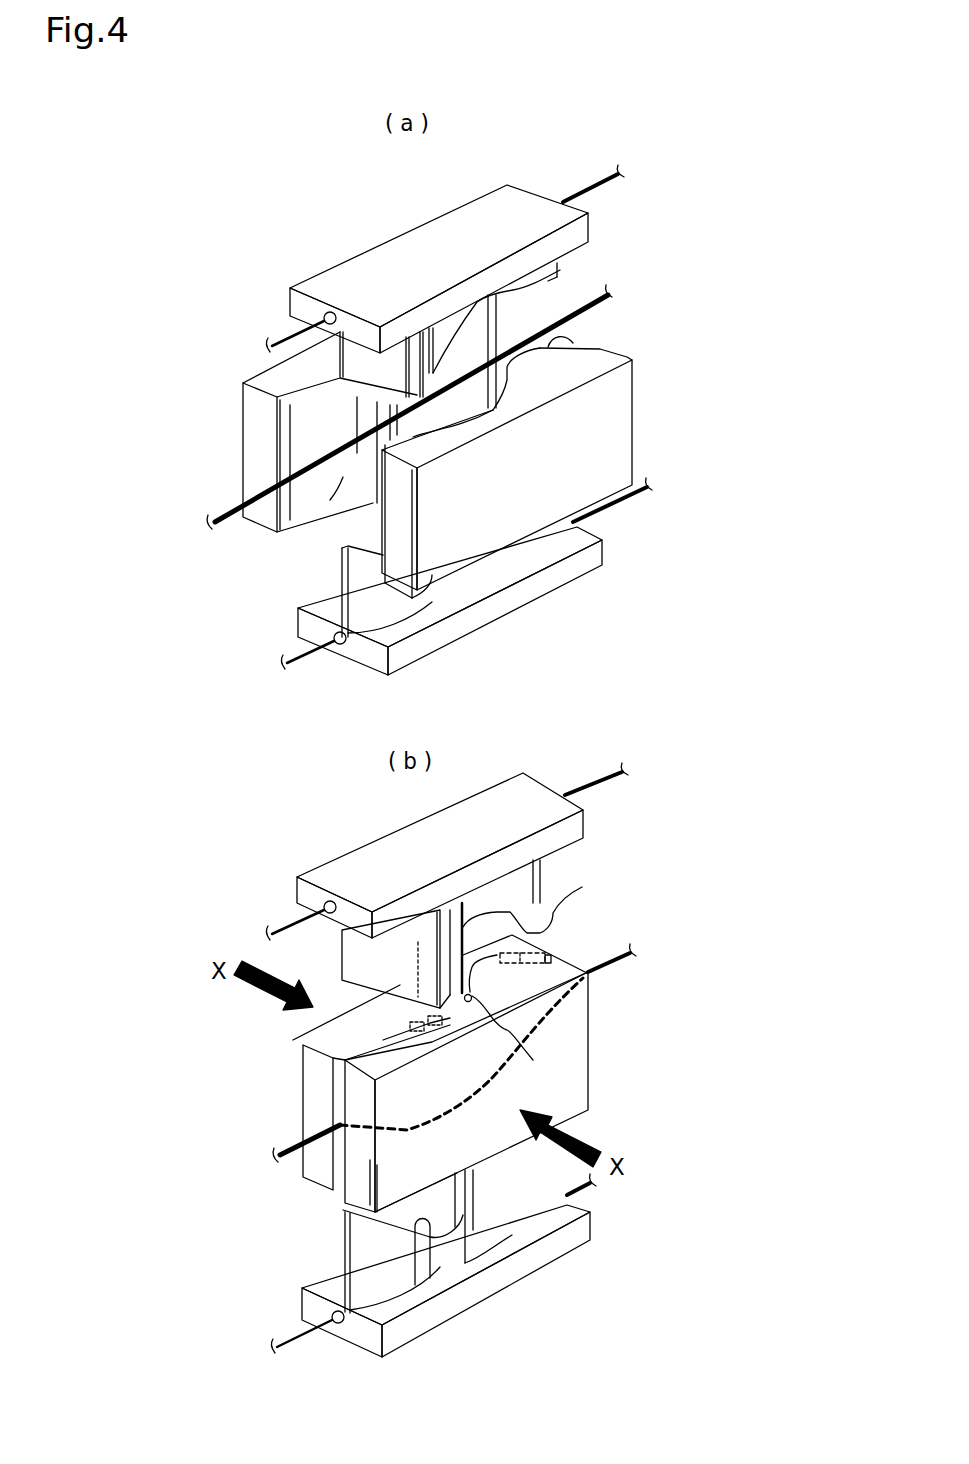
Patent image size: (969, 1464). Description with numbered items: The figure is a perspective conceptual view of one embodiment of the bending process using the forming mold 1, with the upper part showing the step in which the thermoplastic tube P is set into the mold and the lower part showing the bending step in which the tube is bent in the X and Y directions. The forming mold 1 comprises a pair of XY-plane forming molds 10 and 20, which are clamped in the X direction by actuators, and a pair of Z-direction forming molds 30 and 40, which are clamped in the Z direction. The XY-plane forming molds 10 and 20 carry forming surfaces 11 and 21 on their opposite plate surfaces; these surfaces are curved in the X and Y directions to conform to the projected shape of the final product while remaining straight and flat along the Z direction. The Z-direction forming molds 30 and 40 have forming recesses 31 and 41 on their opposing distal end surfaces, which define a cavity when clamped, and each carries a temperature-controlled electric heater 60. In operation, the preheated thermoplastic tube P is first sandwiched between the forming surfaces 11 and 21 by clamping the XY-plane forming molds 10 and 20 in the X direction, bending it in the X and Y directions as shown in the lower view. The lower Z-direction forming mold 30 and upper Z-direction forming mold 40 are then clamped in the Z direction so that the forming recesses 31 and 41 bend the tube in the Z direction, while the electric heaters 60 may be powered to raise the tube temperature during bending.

The forming mold 1 is at (201, 566).
The XY-plane forming mold 10 is at (322, 761).
The forming surface 11 is at (337, 1050).
The XY-plane forming mold 20 is at (534, 805).
The forming surface 21 is at (550, 345).
The lower Z-direction forming mold 30 is at (450, 942).
The forming recess 31 is at (401, 1295).
The upper Z-direction forming mold 40 is at (459, 551).
The forming recess 41 is at (570, 895).
The electric heater 60 is at (314, 805).
The thermoplastic tube P is at (396, 723).